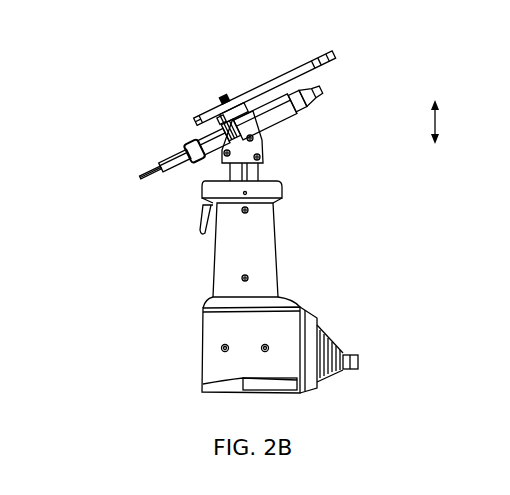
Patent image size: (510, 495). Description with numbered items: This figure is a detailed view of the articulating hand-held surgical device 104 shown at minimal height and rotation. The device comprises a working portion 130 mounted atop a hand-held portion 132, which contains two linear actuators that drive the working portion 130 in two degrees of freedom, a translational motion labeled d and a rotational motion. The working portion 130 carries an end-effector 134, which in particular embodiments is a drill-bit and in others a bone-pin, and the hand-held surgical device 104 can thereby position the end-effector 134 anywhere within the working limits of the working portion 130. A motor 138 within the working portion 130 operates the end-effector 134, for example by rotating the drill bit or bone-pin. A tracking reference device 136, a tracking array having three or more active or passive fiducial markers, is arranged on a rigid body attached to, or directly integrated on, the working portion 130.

The articulating hand-held surgical device 104 is at (108, 76).
The working portion 130 is at (333, 126).
The hand-held portion 132 is at (333, 268).
The end-effector 134 is at (148, 173).
The tracking reference device 136 is at (278, 82).
The motor 138 is at (283, 112).